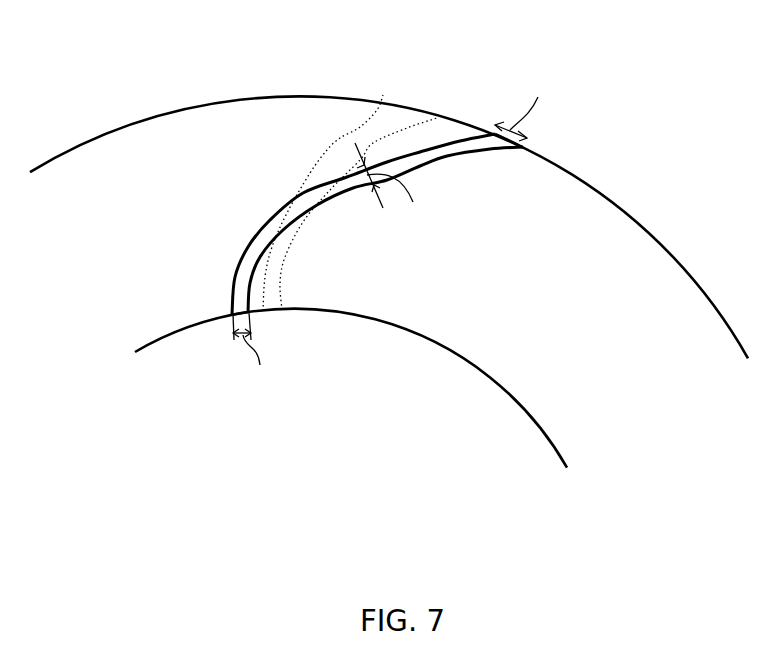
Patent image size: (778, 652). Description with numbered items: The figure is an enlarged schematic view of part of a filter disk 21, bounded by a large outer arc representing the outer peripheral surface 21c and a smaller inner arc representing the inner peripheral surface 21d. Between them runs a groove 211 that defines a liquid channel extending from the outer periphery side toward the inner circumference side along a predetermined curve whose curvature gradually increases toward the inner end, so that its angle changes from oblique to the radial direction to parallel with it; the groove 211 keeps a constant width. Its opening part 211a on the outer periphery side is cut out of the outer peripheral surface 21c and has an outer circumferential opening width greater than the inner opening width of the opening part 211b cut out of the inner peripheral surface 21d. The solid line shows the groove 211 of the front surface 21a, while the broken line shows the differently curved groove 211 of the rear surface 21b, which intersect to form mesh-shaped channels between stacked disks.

The filter disk 21 is at (84, 98).
The front surface 21a is at (162, 148).
The rear surface 21b is at (248, 142).
The outer peripheral surface 21c is at (573, 172).
The inner peripheral surface 21d is at (410, 332).
The groove 211 is at (383, 95).
The opening part on the outer periphery side 211a is at (522, 147).
The opening part on the inner circumference side 211b is at (249, 322).